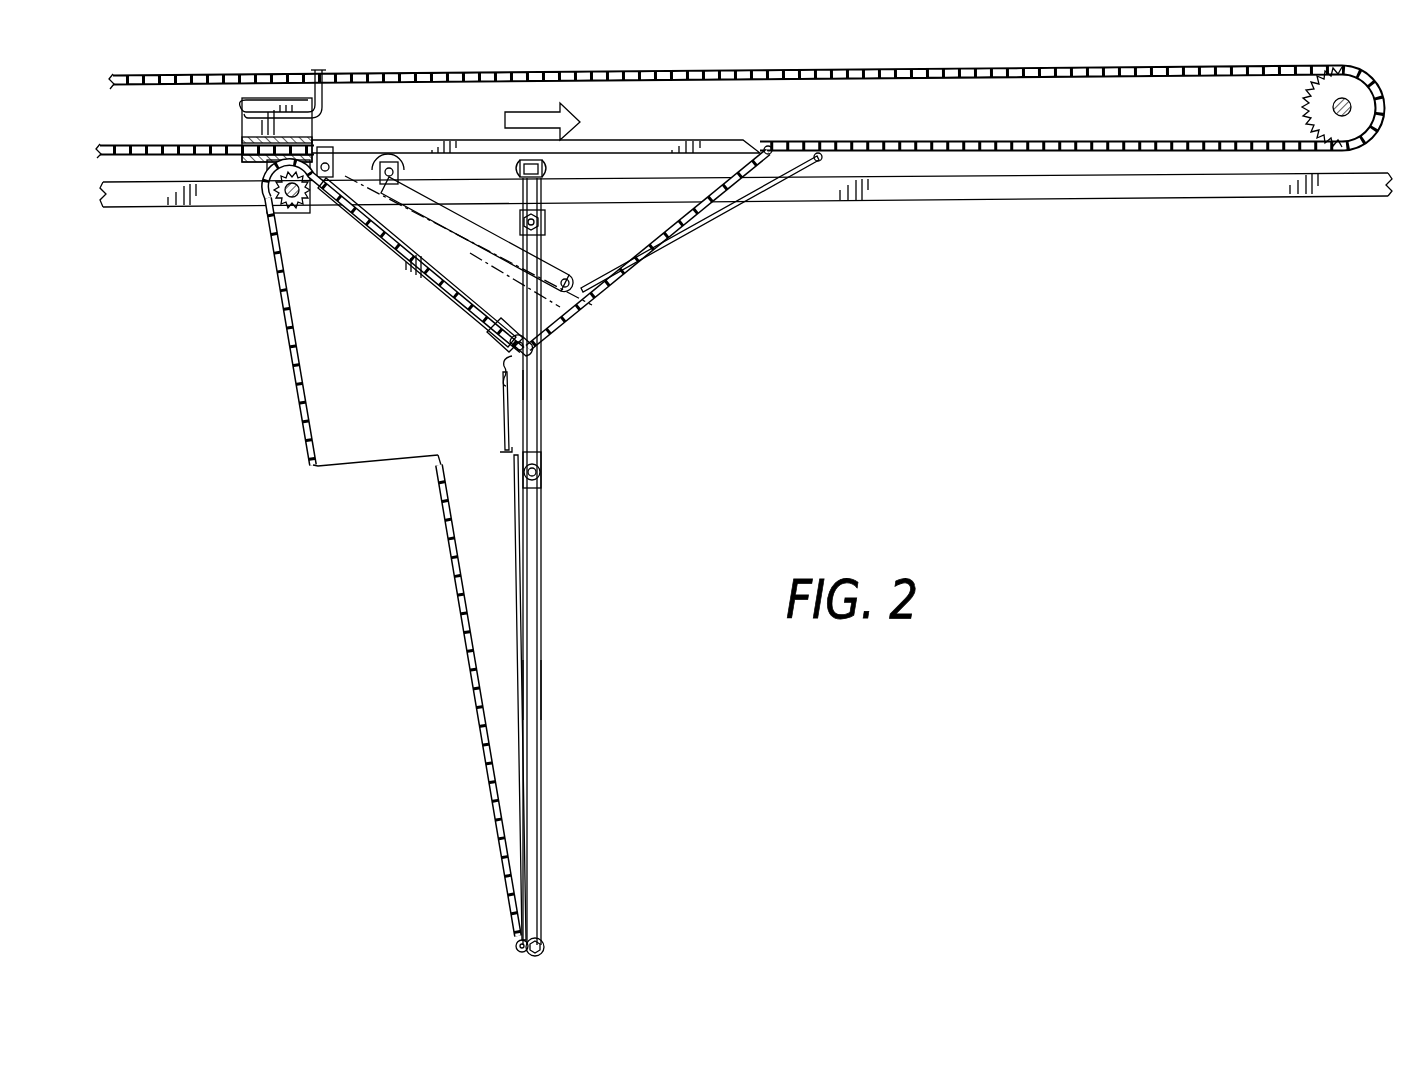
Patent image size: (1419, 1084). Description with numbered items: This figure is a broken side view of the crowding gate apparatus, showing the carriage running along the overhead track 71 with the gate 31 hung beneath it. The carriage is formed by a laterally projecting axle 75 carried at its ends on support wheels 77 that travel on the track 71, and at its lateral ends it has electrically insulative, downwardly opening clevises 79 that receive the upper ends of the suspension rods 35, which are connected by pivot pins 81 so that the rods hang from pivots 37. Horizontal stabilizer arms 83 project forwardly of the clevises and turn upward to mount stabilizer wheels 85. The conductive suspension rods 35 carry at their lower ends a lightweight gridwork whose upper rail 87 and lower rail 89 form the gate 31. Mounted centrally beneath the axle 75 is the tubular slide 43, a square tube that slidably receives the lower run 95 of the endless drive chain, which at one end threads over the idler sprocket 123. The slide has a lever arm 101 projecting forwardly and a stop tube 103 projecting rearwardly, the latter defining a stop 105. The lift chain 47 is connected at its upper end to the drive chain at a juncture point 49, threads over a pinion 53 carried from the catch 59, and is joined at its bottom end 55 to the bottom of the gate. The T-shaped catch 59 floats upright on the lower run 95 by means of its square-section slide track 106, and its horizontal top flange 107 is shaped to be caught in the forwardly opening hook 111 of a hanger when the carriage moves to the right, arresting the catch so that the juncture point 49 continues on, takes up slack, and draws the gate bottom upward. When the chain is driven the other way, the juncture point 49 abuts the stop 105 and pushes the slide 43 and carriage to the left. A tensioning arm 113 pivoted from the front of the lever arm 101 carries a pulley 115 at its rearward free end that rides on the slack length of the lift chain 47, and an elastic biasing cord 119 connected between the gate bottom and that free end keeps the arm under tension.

The gate 31 is at (552, 708).
The suspension rods 35 is at (545, 383).
The pivots 37 is at (558, 208).
The tubular slide 43 is at (618, 125).
The lift chain 47 is at (270, 290).
The juncture point 49 is at (795, 160).
The pinion 53 is at (300, 208).
The bottom end 55 is at (512, 946).
The catch 59 is at (262, 162).
The track 71 is at (1330, 196).
The axle 75 is at (512, 168).
The support wheels 77 is at (552, 168).
The clevises 79 is at (548, 222).
The pivot pins 81 is at (522, 222).
The stabilizer arms 83 is at (448, 210).
The stabilizer wheels 85 is at (384, 160).
The upper rail 87 is at (541, 472).
The lower rail 89 is at (543, 945).
The lower run 95 is at (1300, 142).
The lever arm 101 is at (446, 128).
The stop tube 103 is at (700, 124).
The stop 105 is at (760, 138).
The slide track 106 is at (320, 150).
The top flange 107 is at (240, 98).
The hook 111 is at (348, 102).
The tensioning arm 113 is at (444, 272).
The pulley 115 is at (536, 352).
The elastic biasing cord 119 is at (514, 522).
The idler sprocket 123 is at (1306, 105).